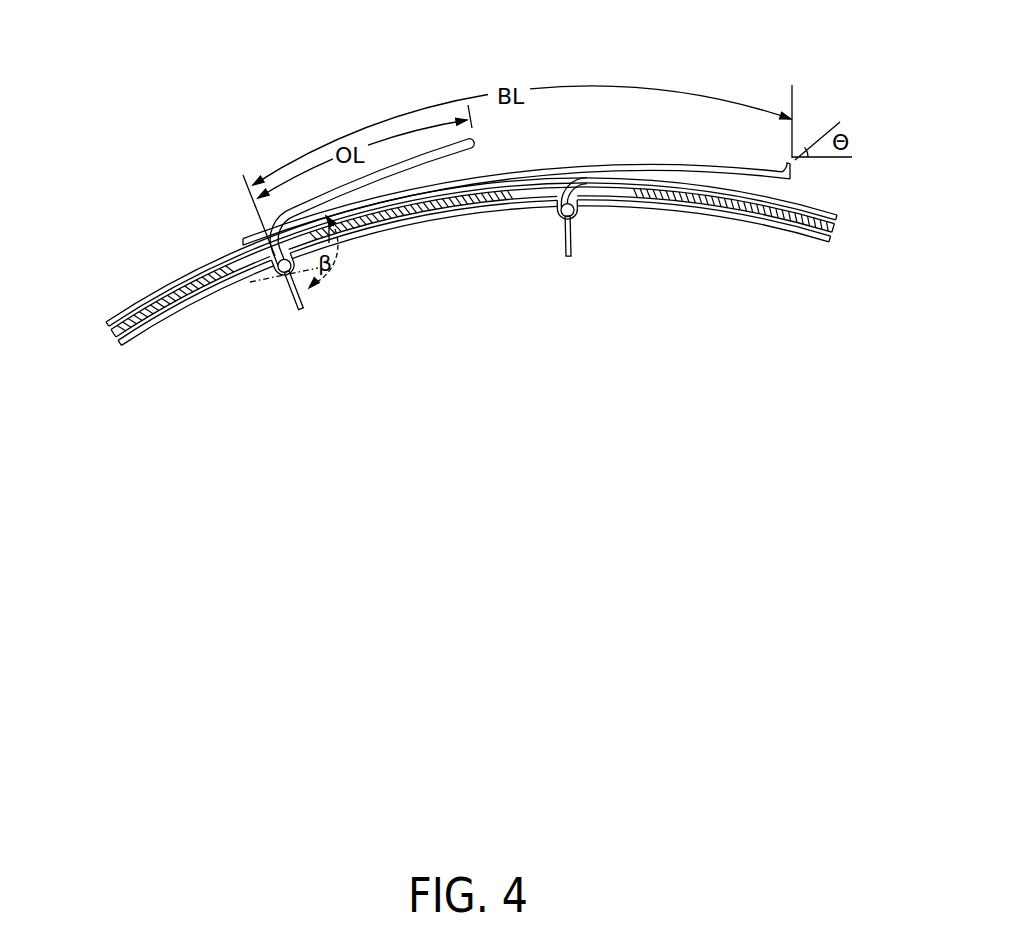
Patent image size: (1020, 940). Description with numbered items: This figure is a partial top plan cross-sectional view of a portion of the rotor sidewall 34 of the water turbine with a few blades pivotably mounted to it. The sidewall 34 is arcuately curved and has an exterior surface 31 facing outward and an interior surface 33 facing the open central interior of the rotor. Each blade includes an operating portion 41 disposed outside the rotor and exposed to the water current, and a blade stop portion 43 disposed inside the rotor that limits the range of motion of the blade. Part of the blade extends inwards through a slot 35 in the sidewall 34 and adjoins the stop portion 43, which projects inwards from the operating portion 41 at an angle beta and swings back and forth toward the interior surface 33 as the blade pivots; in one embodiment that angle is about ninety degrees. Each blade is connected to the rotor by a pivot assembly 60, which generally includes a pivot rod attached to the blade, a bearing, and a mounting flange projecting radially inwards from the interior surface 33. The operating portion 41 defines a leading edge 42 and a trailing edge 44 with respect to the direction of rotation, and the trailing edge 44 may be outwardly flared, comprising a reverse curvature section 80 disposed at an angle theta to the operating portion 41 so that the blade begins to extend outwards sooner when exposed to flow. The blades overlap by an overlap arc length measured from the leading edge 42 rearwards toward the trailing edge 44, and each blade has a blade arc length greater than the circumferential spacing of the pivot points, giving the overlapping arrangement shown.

The exterior surface 31 is at (132, 312).
The interior surface 33 is at (141, 329).
The rotor sidewall 34 is at (726, 212).
The slot 35 is at (228, 273).
The operating portion 41 is at (580, 166).
The leading edge 42 is at (243, 238).
The blade stop portion 43 is at (302, 308).
The trailing edge 44 is at (788, 175).
The pivot assembly 60 is at (275, 284).
The reverse curvature section 80 is at (745, 167).